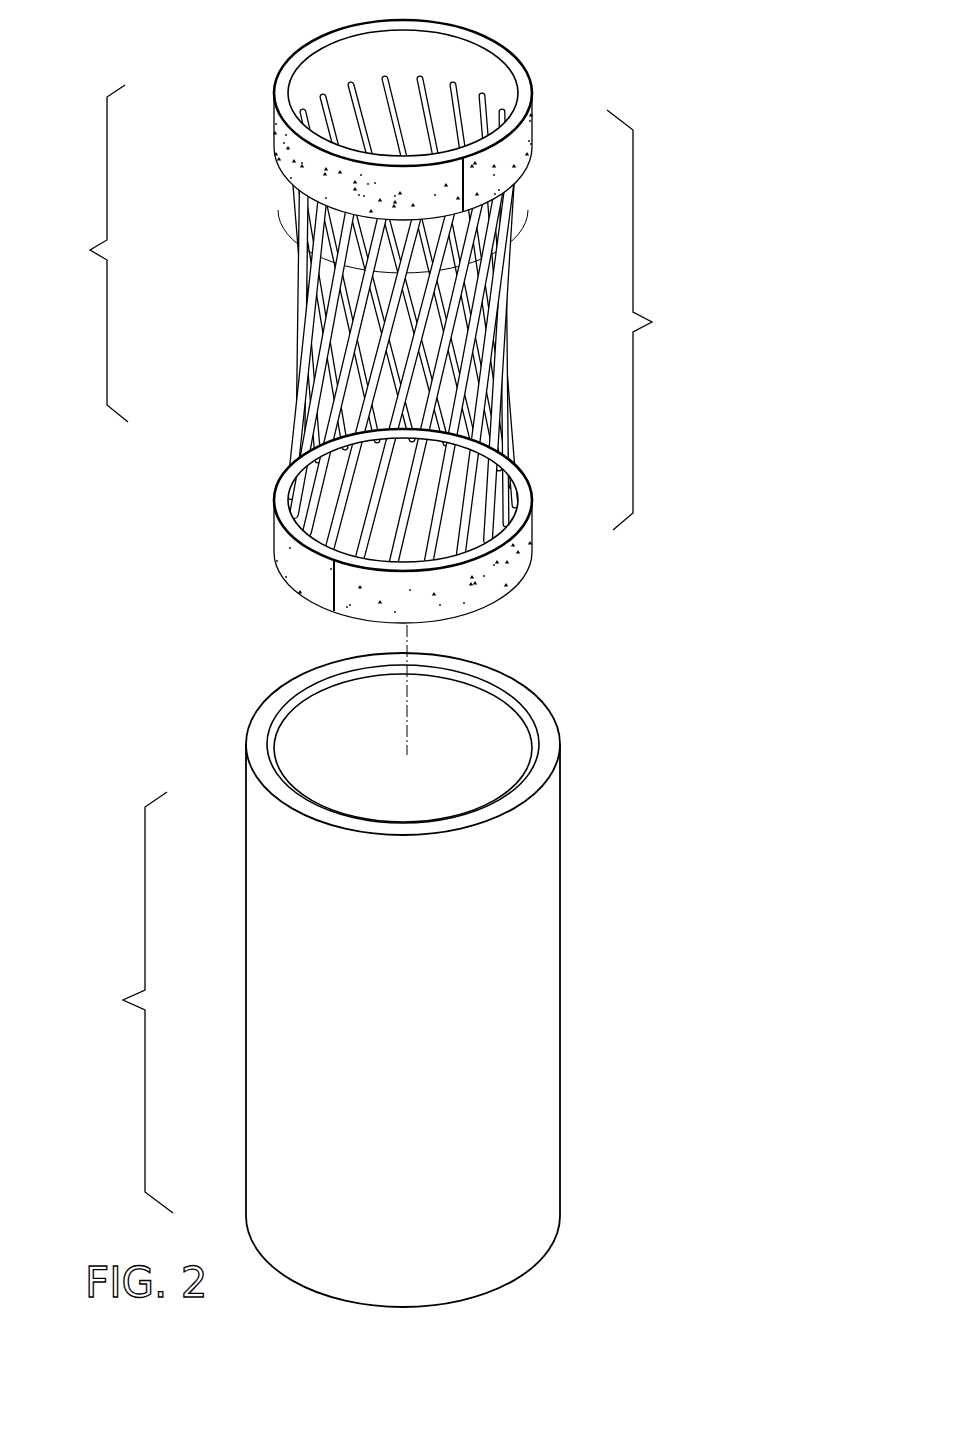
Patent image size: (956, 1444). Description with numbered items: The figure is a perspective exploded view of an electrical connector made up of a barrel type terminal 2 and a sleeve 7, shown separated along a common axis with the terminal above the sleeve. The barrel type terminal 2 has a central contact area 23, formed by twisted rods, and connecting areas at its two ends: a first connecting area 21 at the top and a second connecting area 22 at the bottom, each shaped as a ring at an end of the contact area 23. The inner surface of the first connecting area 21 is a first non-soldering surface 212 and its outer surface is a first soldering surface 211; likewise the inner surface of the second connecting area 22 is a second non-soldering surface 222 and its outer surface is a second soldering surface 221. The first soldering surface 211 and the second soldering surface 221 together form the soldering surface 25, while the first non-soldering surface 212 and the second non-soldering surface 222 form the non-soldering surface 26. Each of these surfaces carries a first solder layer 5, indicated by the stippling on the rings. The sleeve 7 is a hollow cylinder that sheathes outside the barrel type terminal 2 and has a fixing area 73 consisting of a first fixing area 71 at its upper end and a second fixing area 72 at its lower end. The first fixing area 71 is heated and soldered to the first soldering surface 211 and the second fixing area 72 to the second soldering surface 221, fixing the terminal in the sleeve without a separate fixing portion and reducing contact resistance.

The barrel type terminal 2 is at (374, 311).
The first connecting area 21 is at (370, 120).
The first soldering surface 211 is at (522, 137).
The first non-soldering surface 212 is at (310, 80).
The second connecting area 22 is at (421, 526).
The second soldering surface 221 is at (520, 545).
The second non-soldering surface 222 is at (288, 437).
The contact area 23 is at (333, 320).
The soldering surface 25 is at (651, 320).
The non-soldering surface 26 is at (90, 253).
The first solder layer 5 is at (285, 155).
The sleeve 7 is at (360, 980).
The first fixing area 71 is at (255, 815).
The second fixing area 72 is at (290, 1257).
The fixing area 73 is at (321, 980).